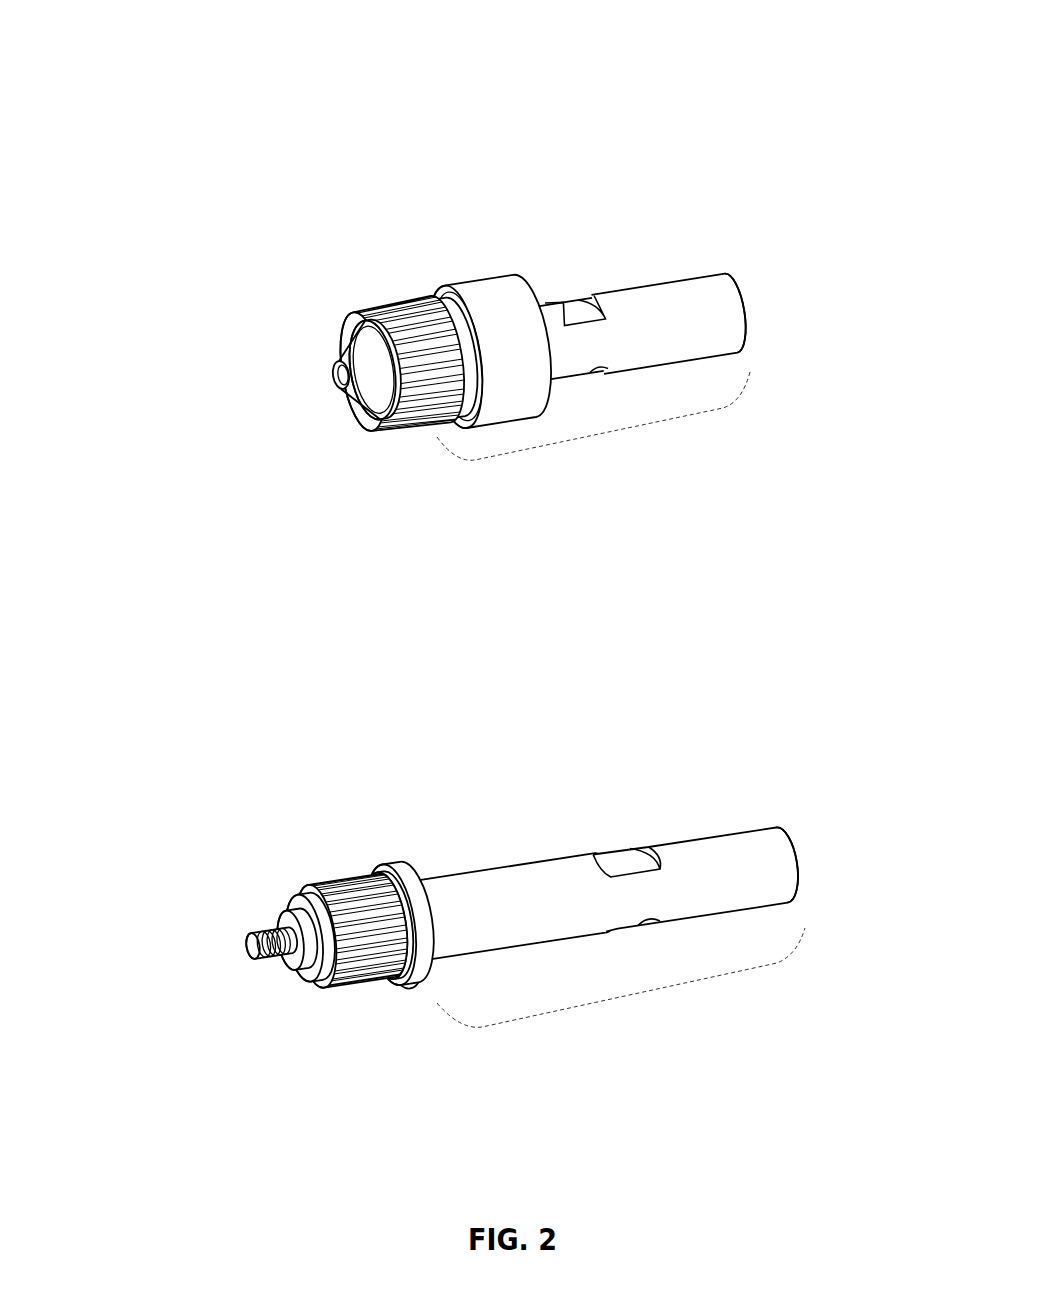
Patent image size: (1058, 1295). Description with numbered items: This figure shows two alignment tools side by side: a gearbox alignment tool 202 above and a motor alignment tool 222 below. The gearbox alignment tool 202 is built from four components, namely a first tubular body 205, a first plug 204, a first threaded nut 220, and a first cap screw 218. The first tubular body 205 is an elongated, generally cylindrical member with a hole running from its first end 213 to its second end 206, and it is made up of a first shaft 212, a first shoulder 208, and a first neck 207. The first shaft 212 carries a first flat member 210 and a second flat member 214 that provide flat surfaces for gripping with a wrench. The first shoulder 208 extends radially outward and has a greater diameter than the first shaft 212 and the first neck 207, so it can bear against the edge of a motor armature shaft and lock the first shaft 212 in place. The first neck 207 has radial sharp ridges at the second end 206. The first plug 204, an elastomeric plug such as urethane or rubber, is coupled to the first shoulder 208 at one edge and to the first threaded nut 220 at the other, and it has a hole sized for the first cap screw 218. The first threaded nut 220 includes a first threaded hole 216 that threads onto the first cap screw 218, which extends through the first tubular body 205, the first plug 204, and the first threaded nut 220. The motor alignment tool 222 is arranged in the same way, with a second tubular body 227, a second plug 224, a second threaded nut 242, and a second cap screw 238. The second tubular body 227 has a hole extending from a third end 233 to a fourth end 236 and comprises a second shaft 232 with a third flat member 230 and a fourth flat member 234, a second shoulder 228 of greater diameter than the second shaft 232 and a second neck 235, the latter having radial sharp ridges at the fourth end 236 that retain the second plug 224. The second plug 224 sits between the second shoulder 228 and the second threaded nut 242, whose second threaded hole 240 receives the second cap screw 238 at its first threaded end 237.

The gearbox alignment tool 202 is at (258, 33).
The first plug 204 is at (376, 302).
The first tubular body 205 is at (603, 433).
The second end 206 is at (410, 300).
The first neck 207 is at (440, 297).
The first shoulder 208 is at (492, 276).
The first flat member 210 is at (573, 302).
The first shaft 212 is at (695, 278).
The first end 213 is at (751, 300).
The second flat member 214 is at (586, 369).
The first threaded hole 216 is at (335, 383).
The first cap screw 218 is at (333, 377).
The first threaded nut 220 is at (340, 352).
The motor alignment tool 222 is at (260, 665).
The second plug 224 is at (345, 878).
The second tubular body 227 is at (627, 997).
The second shoulder 228 is at (392, 868).
The third flat member 230 is at (608, 857).
The second shaft 232 is at (733, 830).
The third end 233 is at (797, 858).
The fourth flat member 234 is at (648, 922).
The second neck 235 is at (408, 987).
The fourth end 236 is at (378, 878).
The first threaded end 237 is at (272, 958).
The second cap screw 238 is at (260, 962).
The second threaded hole 240 is at (277, 932).
The second threaded nut 242 is at (300, 897).